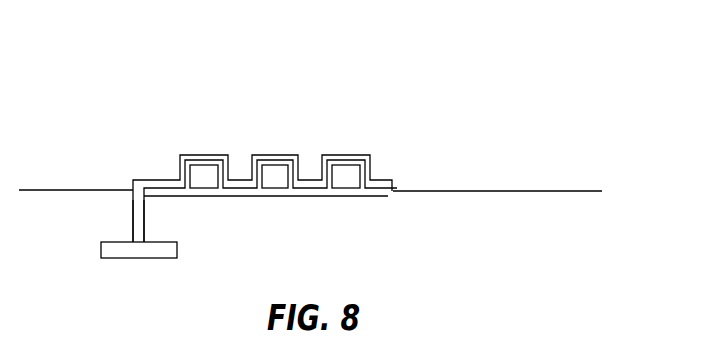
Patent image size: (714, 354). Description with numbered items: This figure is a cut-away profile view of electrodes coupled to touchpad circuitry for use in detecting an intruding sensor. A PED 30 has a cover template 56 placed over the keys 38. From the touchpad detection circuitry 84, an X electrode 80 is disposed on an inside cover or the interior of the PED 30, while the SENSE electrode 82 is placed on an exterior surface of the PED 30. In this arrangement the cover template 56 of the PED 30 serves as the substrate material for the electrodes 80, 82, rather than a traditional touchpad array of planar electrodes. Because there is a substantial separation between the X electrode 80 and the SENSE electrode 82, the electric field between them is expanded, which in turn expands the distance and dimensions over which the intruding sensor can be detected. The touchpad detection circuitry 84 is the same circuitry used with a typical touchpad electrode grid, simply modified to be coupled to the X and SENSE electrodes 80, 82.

The PED 30 is at (480, 190).
The keys 38 is at (343, 170).
The cover template 56 is at (378, 180).
The X electrode 80 is at (146, 229).
The SENSE electrode 82 is at (131, 205).
The touchpad detection circuitry 84 is at (128, 259).